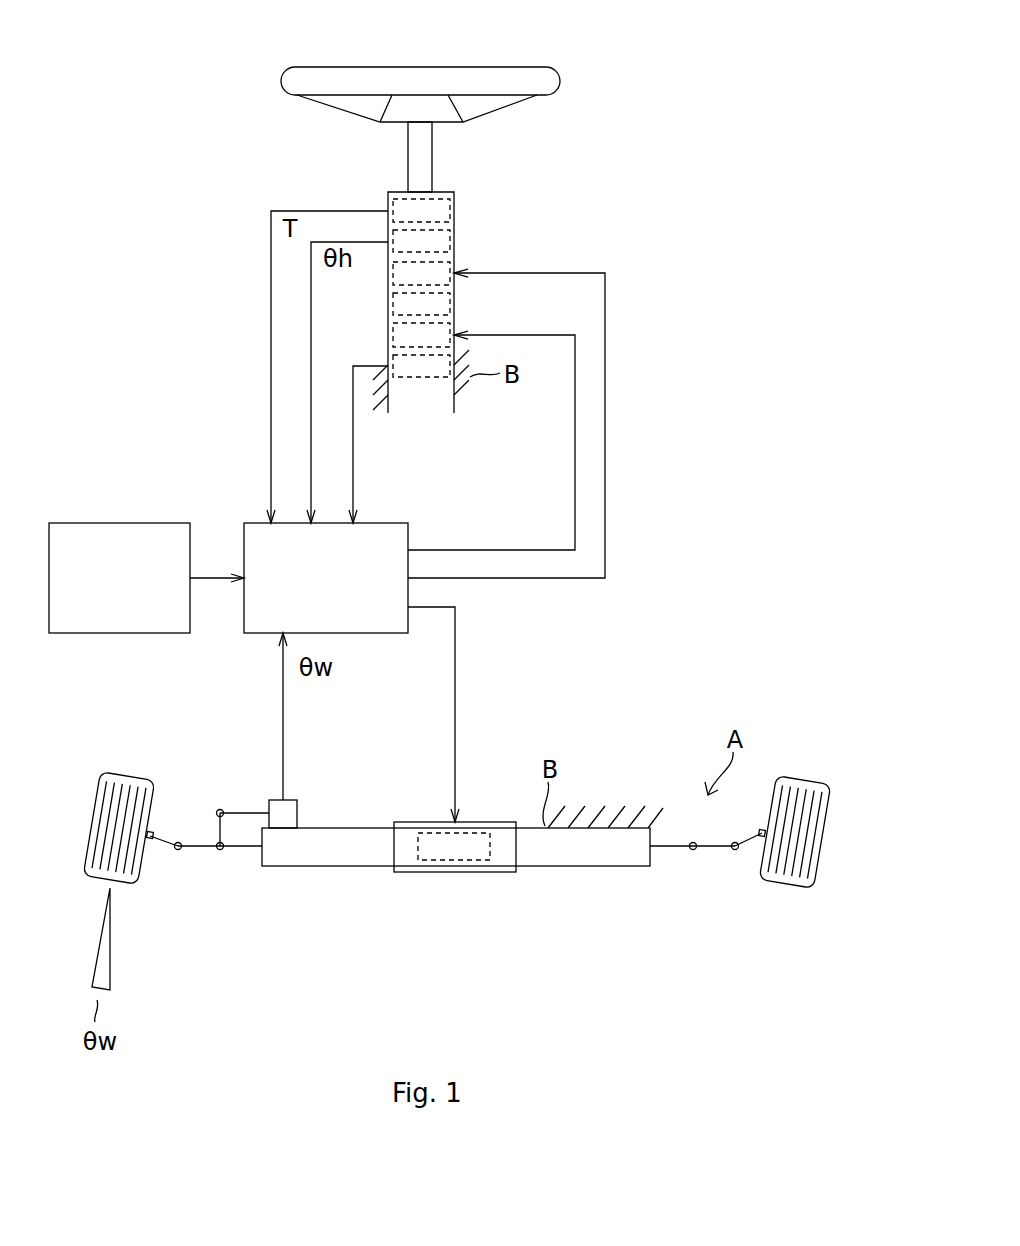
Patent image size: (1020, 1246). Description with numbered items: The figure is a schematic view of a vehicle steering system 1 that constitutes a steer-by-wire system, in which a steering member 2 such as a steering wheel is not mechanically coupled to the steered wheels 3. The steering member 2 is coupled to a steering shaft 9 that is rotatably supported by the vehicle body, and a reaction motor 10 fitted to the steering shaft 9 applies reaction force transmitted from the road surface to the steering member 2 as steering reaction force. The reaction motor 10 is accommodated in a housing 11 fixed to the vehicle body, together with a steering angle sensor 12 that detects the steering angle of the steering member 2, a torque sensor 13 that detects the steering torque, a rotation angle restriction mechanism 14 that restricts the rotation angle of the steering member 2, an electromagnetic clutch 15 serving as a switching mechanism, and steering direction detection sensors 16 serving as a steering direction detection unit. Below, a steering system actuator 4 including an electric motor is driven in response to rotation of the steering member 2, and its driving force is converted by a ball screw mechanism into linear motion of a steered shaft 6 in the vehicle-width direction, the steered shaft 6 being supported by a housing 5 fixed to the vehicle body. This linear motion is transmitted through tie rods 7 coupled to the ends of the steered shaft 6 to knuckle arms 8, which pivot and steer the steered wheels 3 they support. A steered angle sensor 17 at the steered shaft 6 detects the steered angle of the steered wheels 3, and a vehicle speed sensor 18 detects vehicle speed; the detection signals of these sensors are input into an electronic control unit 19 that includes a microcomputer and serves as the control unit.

The vehicle steering system 1 is at (630, 163).
The steering member 2 is at (507, 67).
The steered wheels 3 is at (128, 888).
The steering system actuator 4 is at (455, 862).
The housing 5 is at (358, 868).
The steered shaft 6 is at (242, 852).
The tie rods 7 is at (197, 852).
The knuckle arms 8 is at (165, 840).
The steering shaft 9 is at (433, 153).
The reaction motor 10 is at (457, 262).
The housing 11 is at (397, 192).
The steering angle sensor 12 is at (457, 236).
The torque sensor 13 is at (457, 207).
The rotation angle restriction mechanism 14 is at (457, 300).
The electromagnetic clutch 15 is at (393, 333).
The steering direction detection sensors 16 is at (415, 378).
The steered angle sensor 17 is at (272, 798).
The vehicle speed sensor 18 is at (115, 522).
The electronic control unit (ECU) 19 is at (388, 522).